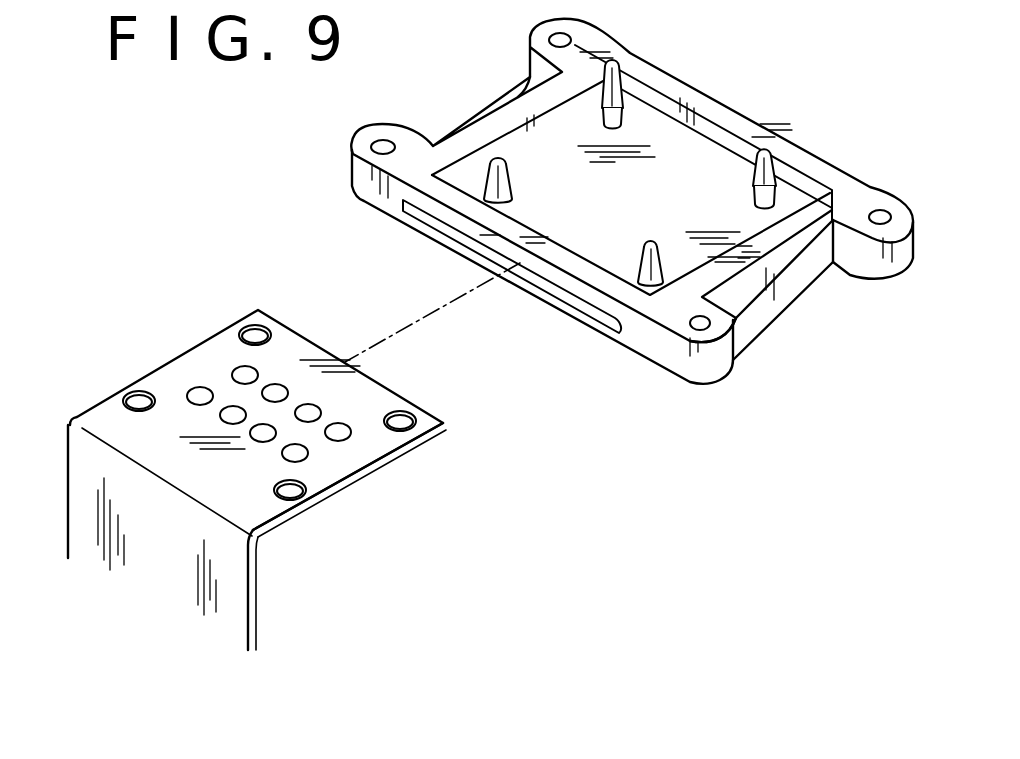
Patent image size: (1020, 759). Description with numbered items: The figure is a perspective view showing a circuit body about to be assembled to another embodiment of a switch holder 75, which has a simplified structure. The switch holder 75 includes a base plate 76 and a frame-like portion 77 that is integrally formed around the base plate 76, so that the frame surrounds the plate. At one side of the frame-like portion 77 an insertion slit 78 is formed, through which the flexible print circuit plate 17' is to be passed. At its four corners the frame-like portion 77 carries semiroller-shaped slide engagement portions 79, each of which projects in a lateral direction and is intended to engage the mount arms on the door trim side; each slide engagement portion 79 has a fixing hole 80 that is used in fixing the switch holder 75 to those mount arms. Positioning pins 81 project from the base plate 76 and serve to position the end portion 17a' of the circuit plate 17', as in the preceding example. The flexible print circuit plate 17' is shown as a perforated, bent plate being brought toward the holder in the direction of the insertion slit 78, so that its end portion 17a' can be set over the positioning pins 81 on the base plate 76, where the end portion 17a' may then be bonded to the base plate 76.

The switch holder 75 is at (788, 318).
The base plate 76 is at (708, 156).
The frame-like portion 77 is at (697, 290).
The insertion slit 78 is at (586, 306).
The slide engagement portion 79 is at (690, 366).
The fixing hole 80 is at (702, 319).
The positioning pin 81 is at (625, 77).
The flexible print circuit plate 17' is at (257, 480).
The end portion of the flexible print circuit plate 17a' is at (352, 490).